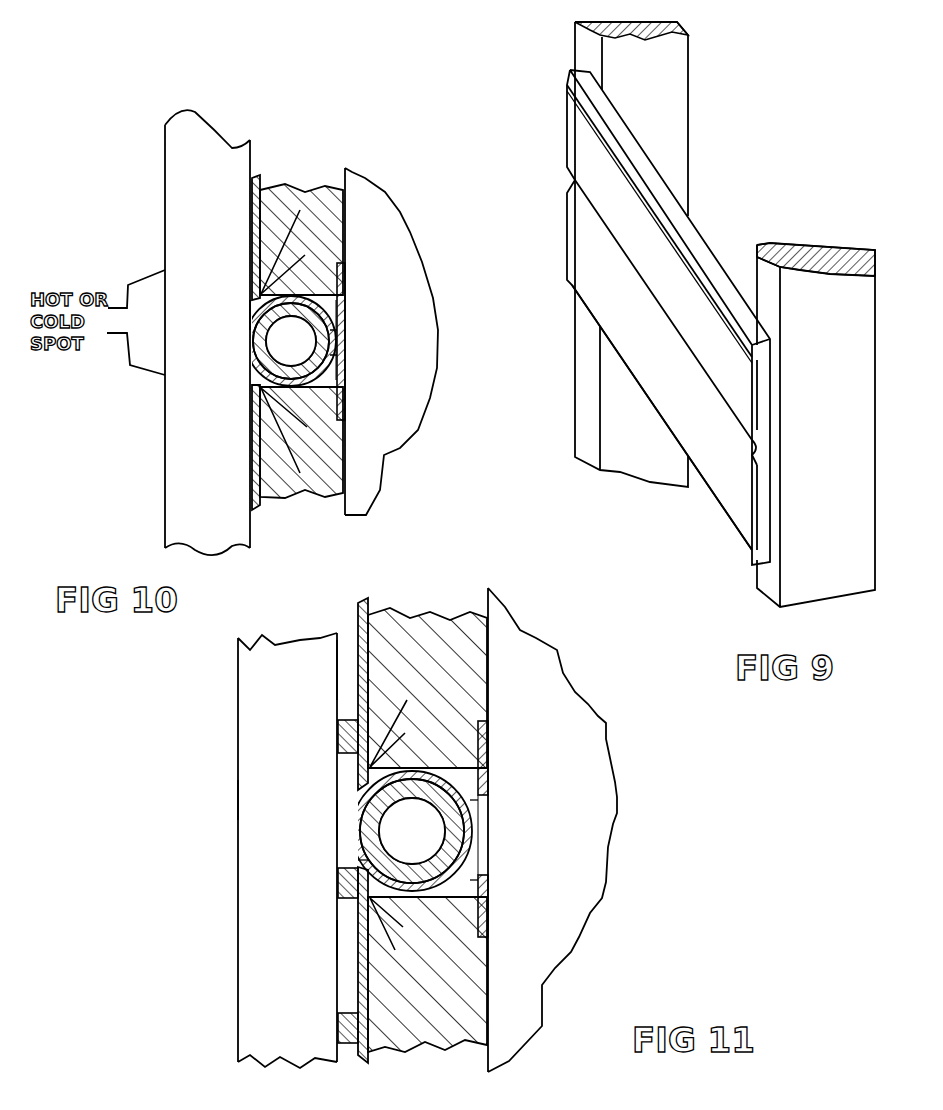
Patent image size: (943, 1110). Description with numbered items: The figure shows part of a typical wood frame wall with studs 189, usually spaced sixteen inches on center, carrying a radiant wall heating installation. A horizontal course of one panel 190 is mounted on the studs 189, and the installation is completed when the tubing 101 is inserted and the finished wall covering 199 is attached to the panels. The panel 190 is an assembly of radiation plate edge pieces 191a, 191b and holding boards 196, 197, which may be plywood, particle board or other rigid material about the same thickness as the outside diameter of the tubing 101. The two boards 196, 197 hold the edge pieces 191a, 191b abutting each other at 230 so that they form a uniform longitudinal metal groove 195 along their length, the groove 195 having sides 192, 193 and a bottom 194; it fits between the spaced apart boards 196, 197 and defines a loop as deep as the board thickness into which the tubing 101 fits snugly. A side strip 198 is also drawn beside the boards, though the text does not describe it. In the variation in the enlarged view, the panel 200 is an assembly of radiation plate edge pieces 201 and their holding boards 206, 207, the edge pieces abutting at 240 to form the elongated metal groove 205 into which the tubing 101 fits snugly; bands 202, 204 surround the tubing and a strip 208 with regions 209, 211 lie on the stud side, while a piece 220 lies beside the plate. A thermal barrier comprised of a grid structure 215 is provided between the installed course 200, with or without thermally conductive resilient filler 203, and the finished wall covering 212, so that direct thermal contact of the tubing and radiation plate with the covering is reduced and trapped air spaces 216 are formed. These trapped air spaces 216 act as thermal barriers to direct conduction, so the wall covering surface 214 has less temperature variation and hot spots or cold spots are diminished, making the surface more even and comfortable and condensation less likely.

In FIG. 10, the studs 189 is at (397, 418).
In FIG. 11, the studs 189 is at (559, 688).
In FIG. 9, the studs 189 is at (680, 58).
In FIG. 10, the panel 190 is at (325, 128).
In FIG. 9, the panel 190 is at (545, 244).
In FIG. 10, the radiation plate edge piece 191a is at (253, 227).
In FIG. 9, the radiation plate edge piece 191a is at (578, 148).
In FIG. 10, the radiation plate edge piece 191b is at (262, 445).
In FIG. 9, the radiation plate edge piece 191b is at (612, 297).
In FIG. 10, the groove side 192 is at (252, 313).
In FIG. 10, the groove side 193 is at (250, 365).
In FIG. 10, the groove bottom 194 is at (350, 373).
In FIG. 10, the metal groove 195 is at (236, 316).
In FIG. 9, the metal groove 195 is at (612, 243).
In FIG. 10, the holding board 196 is at (279, 188).
In FIG. 10, the holding board 197 is at (290, 503).
In FIG. 9, the holding board 197 is at (662, 417).
In FIG. 10, the side strip 198 is at (348, 302).
In FIG. 10, the finished wall covering 199 is at (201, 106).
In FIG. 10, the tubing 101 is at (252, 330).
In FIG. 11, the tubing 101 is at (355, 840).
In FIG. 10, the abutment 230 is at (356, 340).
In FIG. 11, the panel 200 is at (437, 588).
In FIG. 11, the radiation plate edge piece 201 is at (357, 700).
In FIG. 11, the upper gasket band 202 is at (352, 800).
In FIG. 11, the thermally conductive resilient filler 203 is at (345, 877).
In FIG. 11, the lower gasket band 204 is at (485, 890).
In FIG. 11, the metal groove 205 is at (318, 820).
In FIG. 11, the holding board 206 is at (396, 612).
In FIG. 11, the holding board 207 is at (415, 1052).
In FIG. 11, the side strip 208 is at (489, 791).
In FIG. 11, the lower contact region 209 is at (485, 882).
In FIG. 11, the upper contact region 211 is at (489, 812).
In FIG. 11, the finished wall covering 212 is at (255, 708).
In FIG. 11, the wall covering surface 214 is at (240, 800).
In FIG. 11, the grid structure 215 is at (348, 626).
In FIG. 11, the trapped air spaces 216 is at (347, 940).
In FIG. 11, the spacer 220 is at (358, 868).
In FIG. 11, the abutment 240 is at (499, 829).